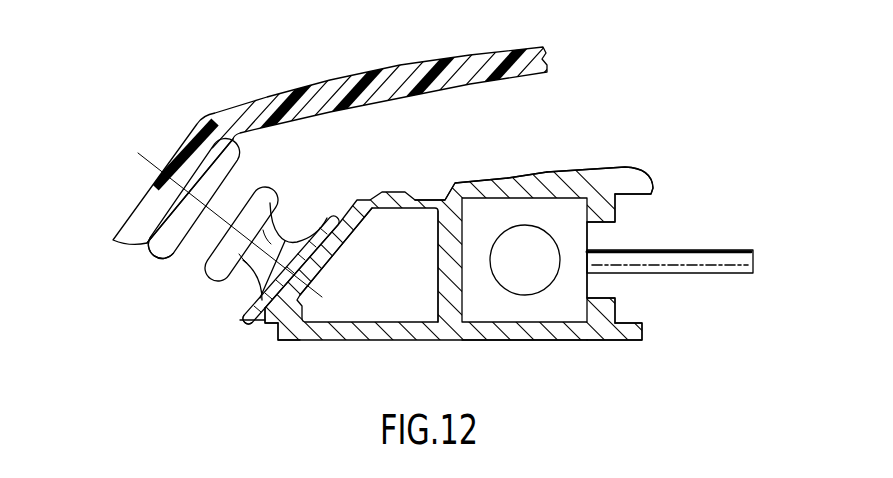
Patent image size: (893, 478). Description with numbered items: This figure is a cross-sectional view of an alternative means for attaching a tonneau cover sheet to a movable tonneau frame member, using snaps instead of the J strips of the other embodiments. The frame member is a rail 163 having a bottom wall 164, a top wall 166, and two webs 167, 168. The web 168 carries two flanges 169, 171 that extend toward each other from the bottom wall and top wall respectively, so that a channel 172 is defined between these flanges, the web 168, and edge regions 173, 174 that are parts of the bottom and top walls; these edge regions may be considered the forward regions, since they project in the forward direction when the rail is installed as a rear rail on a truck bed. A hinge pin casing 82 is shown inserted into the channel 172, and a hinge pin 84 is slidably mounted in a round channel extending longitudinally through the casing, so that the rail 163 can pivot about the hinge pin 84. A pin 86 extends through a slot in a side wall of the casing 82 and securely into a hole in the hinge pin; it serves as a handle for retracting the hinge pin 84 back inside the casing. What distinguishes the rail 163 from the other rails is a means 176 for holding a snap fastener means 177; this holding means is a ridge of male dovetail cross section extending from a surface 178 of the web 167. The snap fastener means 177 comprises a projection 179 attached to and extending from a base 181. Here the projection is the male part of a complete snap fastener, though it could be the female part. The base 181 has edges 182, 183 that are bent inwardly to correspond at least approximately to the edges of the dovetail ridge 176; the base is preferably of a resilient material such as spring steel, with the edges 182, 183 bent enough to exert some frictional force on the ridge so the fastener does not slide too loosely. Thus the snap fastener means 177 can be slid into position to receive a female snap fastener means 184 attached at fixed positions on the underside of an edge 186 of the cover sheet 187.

The cover sheet 187 is at (356, 73).
The edge of cover sheet 186 is at (112, 241).
The female snap fastener means 184 is at (148, 251).
The projection 179 is at (268, 193).
The snap fastener means 177 is at (314, 203).
The edge of base 182 is at (343, 212).
The base 181 is at (247, 310).
The edge of base 183 is at (244, 328).
The bottom wall 164 is at (394, 340).
The top wall 166 is at (467, 178).
The edge region of top wall 174 is at (530, 175).
The rail 163 is at (624, 160).
The flange 171 is at (616, 210).
The flange 169 is at (592, 300).
The channel 172 is at (573, 315).
The edge region of bottom wall 173 is at (550, 343).
The web 167 is at (340, 262).
The web 168 is at (448, 258).
The means for holding snap fastener means 176 is at (267, 337).
The surface of web 178 is at (277, 343).
The hinge pin casing 82 is at (487, 312).
The hinge pin 84 is at (530, 283).
The pin 86 is at (733, 250).